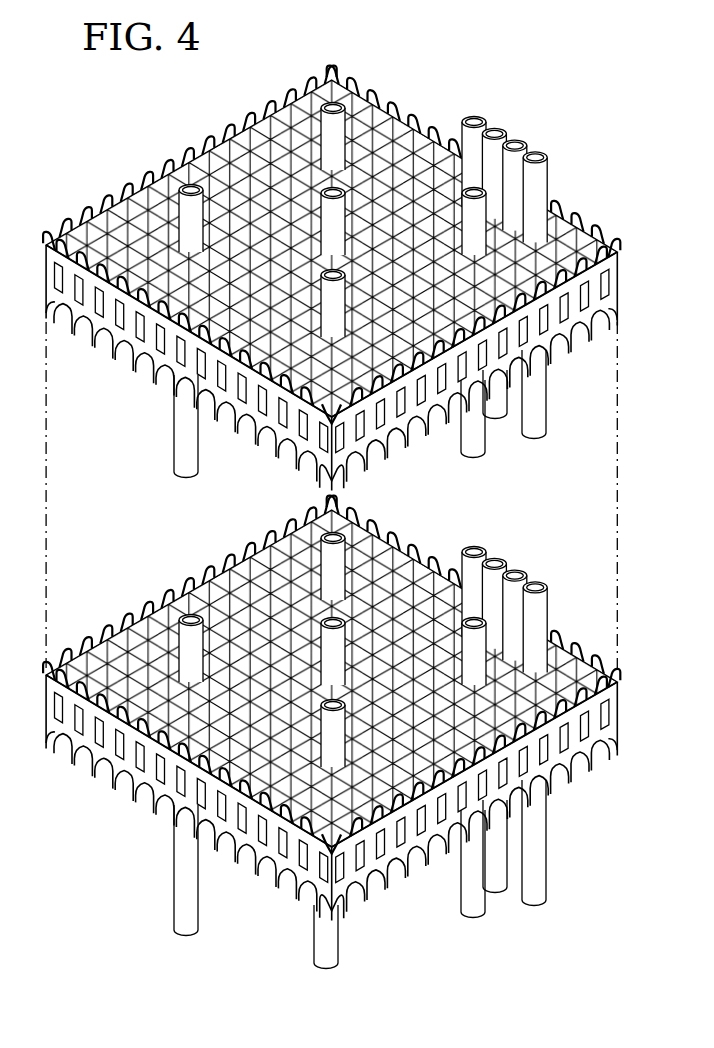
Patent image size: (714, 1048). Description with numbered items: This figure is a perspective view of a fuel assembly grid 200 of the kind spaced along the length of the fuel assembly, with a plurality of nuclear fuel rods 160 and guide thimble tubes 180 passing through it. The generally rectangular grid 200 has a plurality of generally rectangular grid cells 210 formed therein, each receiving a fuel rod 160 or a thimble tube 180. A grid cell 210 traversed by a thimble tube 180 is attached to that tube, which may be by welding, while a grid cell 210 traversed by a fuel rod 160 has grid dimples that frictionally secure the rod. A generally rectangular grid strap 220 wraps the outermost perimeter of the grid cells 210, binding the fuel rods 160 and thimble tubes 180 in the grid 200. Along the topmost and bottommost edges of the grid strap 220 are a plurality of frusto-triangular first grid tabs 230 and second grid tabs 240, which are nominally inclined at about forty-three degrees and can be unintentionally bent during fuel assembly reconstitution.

The fuel rod 160 is at (470, 132).
The guide thimble tube 180 is at (327, 157).
The fuel assembly grid 200 is at (573, 199).
The grid cell 210 is at (123, 235).
The grid strap 220 is at (573, 310).
The first grid tab 230 is at (192, 162).
The second grid tab 240 is at (165, 381).